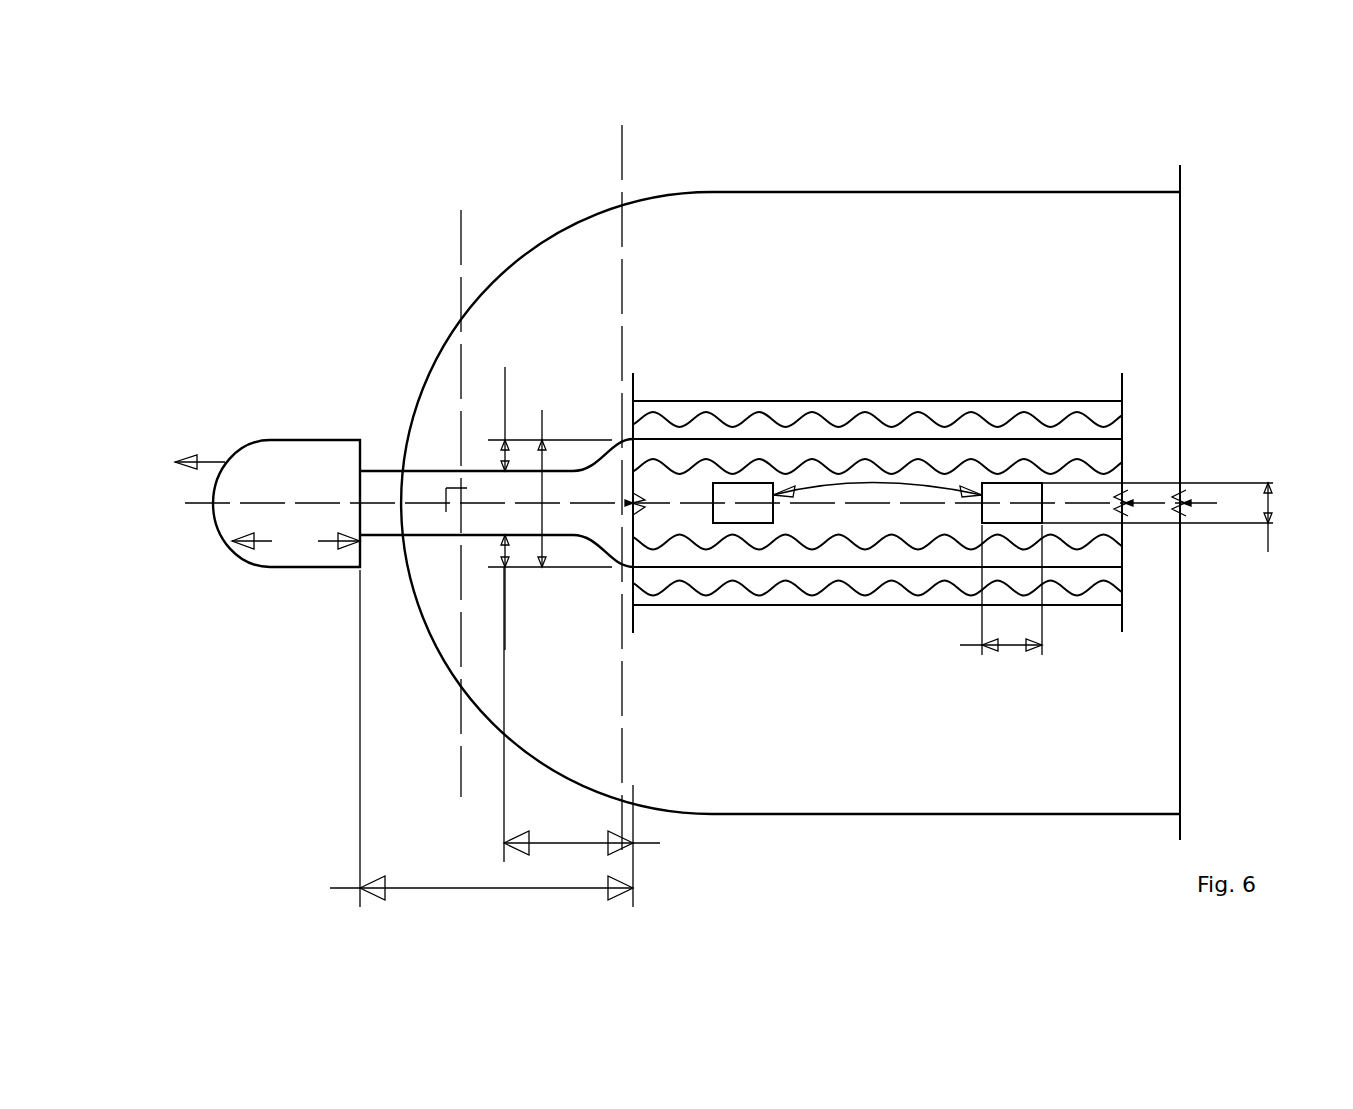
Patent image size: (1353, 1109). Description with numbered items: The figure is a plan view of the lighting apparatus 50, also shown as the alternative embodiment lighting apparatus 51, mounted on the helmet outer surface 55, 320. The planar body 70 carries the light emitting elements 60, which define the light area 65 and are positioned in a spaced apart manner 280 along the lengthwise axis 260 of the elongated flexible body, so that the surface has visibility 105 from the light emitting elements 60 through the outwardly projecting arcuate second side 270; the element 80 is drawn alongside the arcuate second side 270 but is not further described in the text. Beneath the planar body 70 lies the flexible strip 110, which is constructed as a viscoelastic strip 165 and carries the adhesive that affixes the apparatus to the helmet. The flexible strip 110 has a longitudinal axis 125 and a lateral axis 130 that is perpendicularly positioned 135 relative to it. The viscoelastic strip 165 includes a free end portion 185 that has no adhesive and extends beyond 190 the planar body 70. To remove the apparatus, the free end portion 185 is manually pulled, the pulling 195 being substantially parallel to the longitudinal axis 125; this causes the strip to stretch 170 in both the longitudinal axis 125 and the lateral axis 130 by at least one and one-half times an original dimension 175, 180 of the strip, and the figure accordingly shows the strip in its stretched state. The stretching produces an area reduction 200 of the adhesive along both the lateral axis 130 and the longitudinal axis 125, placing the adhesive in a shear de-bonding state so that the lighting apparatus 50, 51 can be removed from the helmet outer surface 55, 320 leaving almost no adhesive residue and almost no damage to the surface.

The lighting apparatus 50 is at (1223, 462).
The lighting apparatus 51 is at (1157, 137).
The surface 55 is at (733, 283).
The light emitting element 60 is at (1031, 436).
The light area 65 is at (1000, 336).
The planar body 70 is at (884, 534).
The compliant member 80 is at (876, 454).
The visibility 105 is at (1025, 495).
The flexible strip 110 is at (613, 497).
The longitudinal axis 125 is at (225, 503).
The lateral axis 130 is at (460, 238).
The perpendicularly positioned 135 is at (449, 488).
The viscoelastic strip 165 is at (460, 738).
The stretch 170 is at (548, 496).
The original dimension 175 is at (629, 737).
The original dimension 180 is at (546, 477).
The free end portion 185 is at (325, 483).
The extends beyond 190 is at (296, 541).
The pulling 195 is at (209, 460).
The area reduction 200 is at (619, 625).
The lengthwise axis 260 is at (1199, 503).
The outwardly projecting arcuate second side 270 is at (1117, 474).
The spaced apart manner 280 is at (868, 482).
The helmet outer surface 320 is at (773, 332).